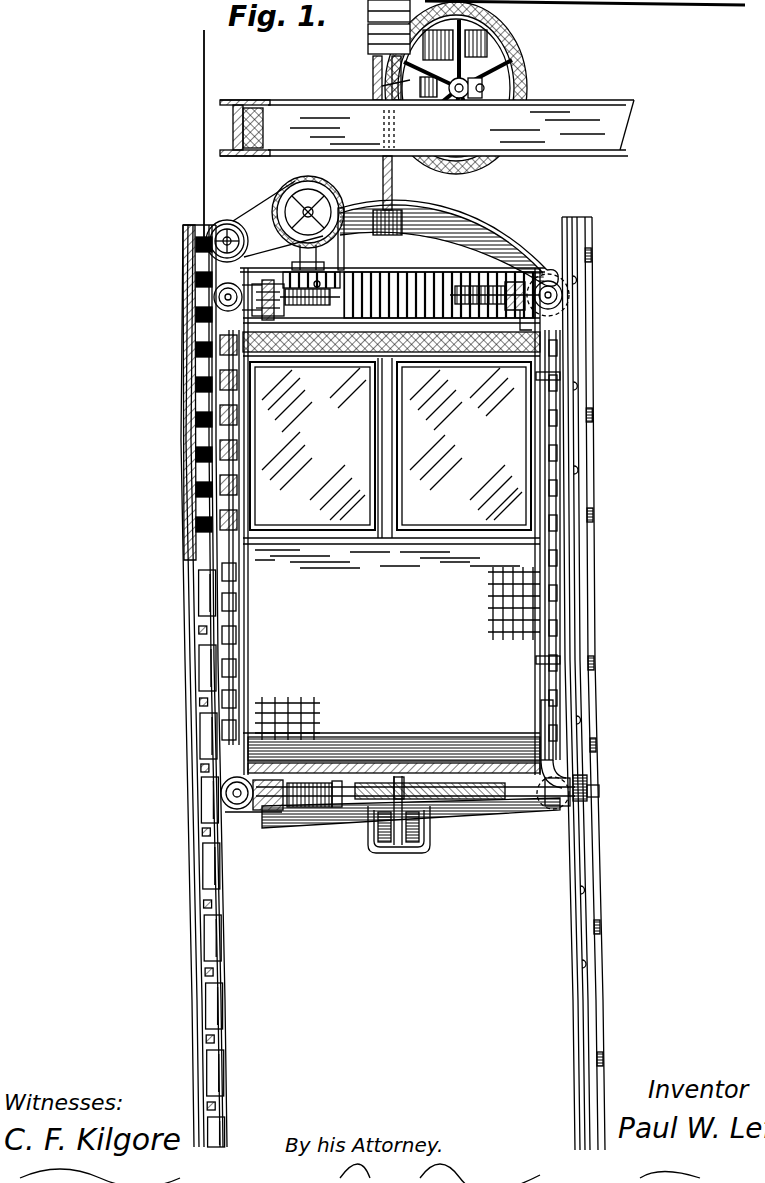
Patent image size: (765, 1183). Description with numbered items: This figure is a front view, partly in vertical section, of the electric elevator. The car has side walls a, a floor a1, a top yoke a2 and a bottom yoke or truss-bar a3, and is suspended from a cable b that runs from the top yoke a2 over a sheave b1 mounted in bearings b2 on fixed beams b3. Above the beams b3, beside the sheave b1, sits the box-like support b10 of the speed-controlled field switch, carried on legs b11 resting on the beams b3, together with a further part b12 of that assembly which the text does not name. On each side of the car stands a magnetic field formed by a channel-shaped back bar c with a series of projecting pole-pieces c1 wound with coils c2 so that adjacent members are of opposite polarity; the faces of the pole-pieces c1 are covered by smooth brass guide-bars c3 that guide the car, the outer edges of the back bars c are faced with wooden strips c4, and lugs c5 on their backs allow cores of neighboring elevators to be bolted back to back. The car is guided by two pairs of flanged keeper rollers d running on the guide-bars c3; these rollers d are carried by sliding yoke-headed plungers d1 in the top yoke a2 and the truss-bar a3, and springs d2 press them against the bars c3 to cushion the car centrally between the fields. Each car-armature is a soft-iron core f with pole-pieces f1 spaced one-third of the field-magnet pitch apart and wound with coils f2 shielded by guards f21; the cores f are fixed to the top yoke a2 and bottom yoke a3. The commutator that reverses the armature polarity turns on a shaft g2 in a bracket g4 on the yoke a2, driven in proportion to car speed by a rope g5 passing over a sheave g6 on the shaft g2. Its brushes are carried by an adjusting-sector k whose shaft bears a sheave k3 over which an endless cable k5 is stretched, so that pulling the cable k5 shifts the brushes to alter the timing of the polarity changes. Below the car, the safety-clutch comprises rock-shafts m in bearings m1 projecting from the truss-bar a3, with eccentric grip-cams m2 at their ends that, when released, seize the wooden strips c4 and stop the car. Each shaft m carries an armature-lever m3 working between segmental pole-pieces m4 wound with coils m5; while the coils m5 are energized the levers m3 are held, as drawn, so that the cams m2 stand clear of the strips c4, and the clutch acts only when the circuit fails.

The side walls a is at (312, 718).
The floor a1 is at (392, 770).
The top yoke a2 is at (497, 242).
The bottom yoke or truss-bar a3 is at (440, 826).
The cable b is at (700, 5).
The sheave b1 is at (507, 70).
The bearings b2 is at (457, 98).
The fixed beams b3 is at (552, 130).
The box-like support b10 is at (392, 14).
The legs b11 is at (382, 86).
The brake support b12 is at (392, 38).
The channel-shaped core or back bar c is at (184, 403).
The pole-pieces c1 is at (183, 262).
The magnetic coils c2 is at (194, 246).
The guide-bars c3 is at (194, 436).
The wooden strips c4 is at (574, 335).
The lugs c5 is at (592, 254).
The flanged guide or keeper rollers d is at (213, 298).
The sliding yoke-headed plungers d1 is at (246, 290).
The springs d2 is at (470, 288).
The soft-iron bar or core f is at (241, 606).
The pole-pieces f1 is at (238, 496).
The coils f2 is at (238, 441).
The guards f21 is at (553, 380).
The commutator shaft g2 is at (229, 220).
The bracket g4 is at (318, 281).
The rope g5 is at (203, 182).
The sheave g6 is at (292, 192).
The adjusting-sector k is at (330, 186).
The sheave k3 is at (341, 207).
The endless cable k5 is at (346, 258).
The rock shafts or rods m is at (372, 788).
The bearings m1 is at (558, 807).
The grip-cams or eccentric friction-blocks m2 is at (599, 792).
The armature-lever m3 is at (408, 781).
The segmental pole-pieces m4 is at (462, 786).
The coils m5 is at (416, 848).